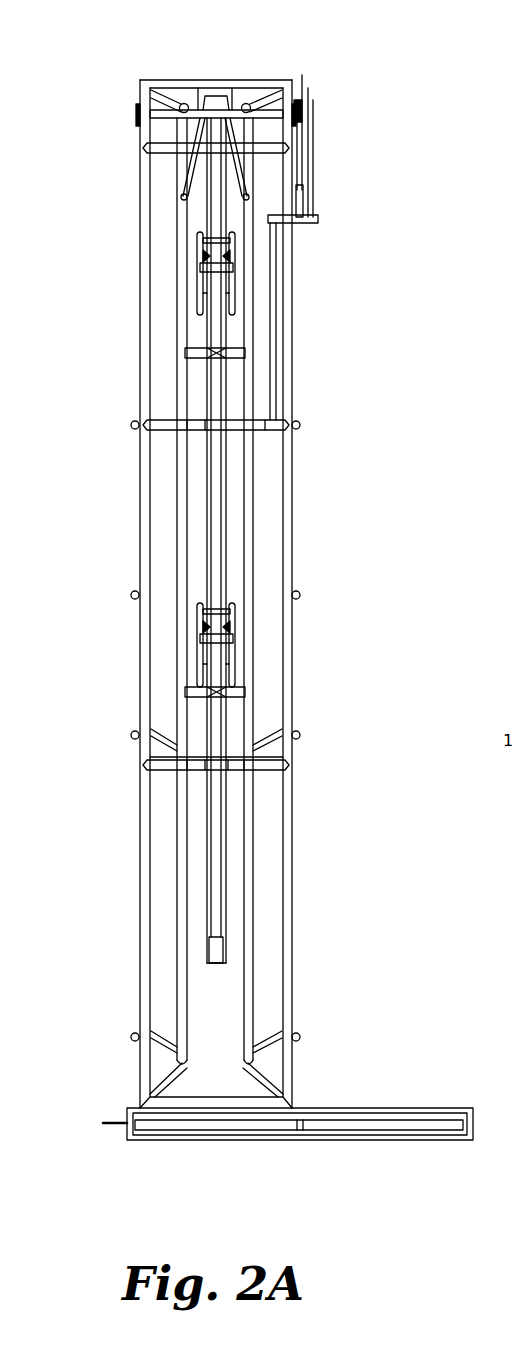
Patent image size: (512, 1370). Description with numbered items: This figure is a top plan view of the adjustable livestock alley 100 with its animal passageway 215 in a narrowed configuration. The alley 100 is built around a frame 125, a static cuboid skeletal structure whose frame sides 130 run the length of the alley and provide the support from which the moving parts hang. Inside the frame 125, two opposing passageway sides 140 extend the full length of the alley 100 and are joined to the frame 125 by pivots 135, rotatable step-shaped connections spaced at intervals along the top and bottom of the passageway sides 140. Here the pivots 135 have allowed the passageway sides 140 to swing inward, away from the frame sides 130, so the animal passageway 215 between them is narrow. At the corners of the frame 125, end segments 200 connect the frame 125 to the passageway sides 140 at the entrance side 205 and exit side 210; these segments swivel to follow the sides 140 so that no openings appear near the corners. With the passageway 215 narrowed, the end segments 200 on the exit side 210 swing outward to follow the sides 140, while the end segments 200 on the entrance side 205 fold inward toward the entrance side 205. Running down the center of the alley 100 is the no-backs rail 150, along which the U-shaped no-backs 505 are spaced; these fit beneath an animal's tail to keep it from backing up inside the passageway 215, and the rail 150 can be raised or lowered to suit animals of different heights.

The alley 100 is at (245, 616).
The frame 125 is at (205, 1039).
The frame sides 130 is at (150, 864).
The pivots 135 is at (130, 1037).
The passageway sides 140 is at (180, 944).
The no-backs rail 150 is at (212, 520).
The end segments 200 is at (168, 92).
The entrance side 205 is at (216, 58).
The exit side 210 is at (216, 1160).
The animal passageway 215 is at (233, 1019).
The no-backs 505 is at (200, 272).